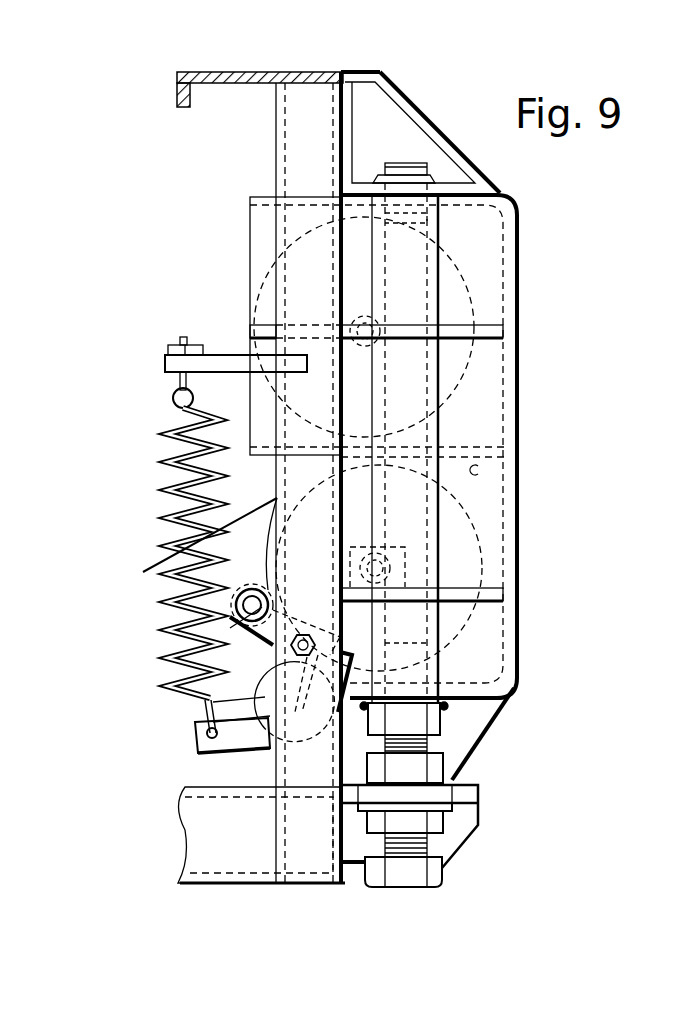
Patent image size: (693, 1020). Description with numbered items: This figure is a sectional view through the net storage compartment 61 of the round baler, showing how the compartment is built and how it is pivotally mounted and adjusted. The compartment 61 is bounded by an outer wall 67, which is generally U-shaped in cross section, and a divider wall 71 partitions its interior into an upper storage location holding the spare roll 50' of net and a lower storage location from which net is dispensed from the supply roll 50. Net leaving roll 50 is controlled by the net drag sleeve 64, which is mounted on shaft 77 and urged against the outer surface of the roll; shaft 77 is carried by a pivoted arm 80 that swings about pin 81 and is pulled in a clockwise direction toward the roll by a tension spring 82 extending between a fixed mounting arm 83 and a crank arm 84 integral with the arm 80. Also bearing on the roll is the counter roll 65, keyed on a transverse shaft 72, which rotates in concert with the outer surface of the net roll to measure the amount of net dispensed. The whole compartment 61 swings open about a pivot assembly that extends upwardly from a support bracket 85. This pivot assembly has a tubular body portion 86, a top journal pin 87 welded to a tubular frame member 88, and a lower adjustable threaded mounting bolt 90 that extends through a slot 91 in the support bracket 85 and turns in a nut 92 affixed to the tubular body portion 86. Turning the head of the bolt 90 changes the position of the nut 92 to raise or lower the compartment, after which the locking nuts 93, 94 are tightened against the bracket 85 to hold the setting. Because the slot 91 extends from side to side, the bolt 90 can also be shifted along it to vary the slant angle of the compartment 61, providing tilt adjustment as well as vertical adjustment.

The storage compartment 61 is at (535, 325).
The tubular frame member 88 is at (460, 185).
The top journal pin 87 is at (400, 170).
The divider wall 71 is at (463, 440).
The outer wall 67 is at (520, 410).
The spare roll 50' is at (426, 326).
The tubular body portion 86 is at (440, 287).
The supply roll 50 is at (432, 568).
The fixed mounting arm 83 is at (222, 340).
The tension spring 82 is at (165, 480).
The net drag sleeve 64 is at (268, 585).
The shaft 77 is at (235, 605).
The pin 81 is at (305, 640).
The transverse shaft 72 is at (312, 700).
The arm 80 is at (213, 658).
The counter roll 65 is at (208, 712).
The crank arm 84 is at (243, 745).
The nut 92 is at (430, 720).
The slot 91 is at (375, 797).
The locking nut 94 is at (430, 768).
The support bracket 85 is at (470, 793).
The locking nut 93 is at (435, 820).
The adjustable threaded mounting bolt 90 is at (430, 875).